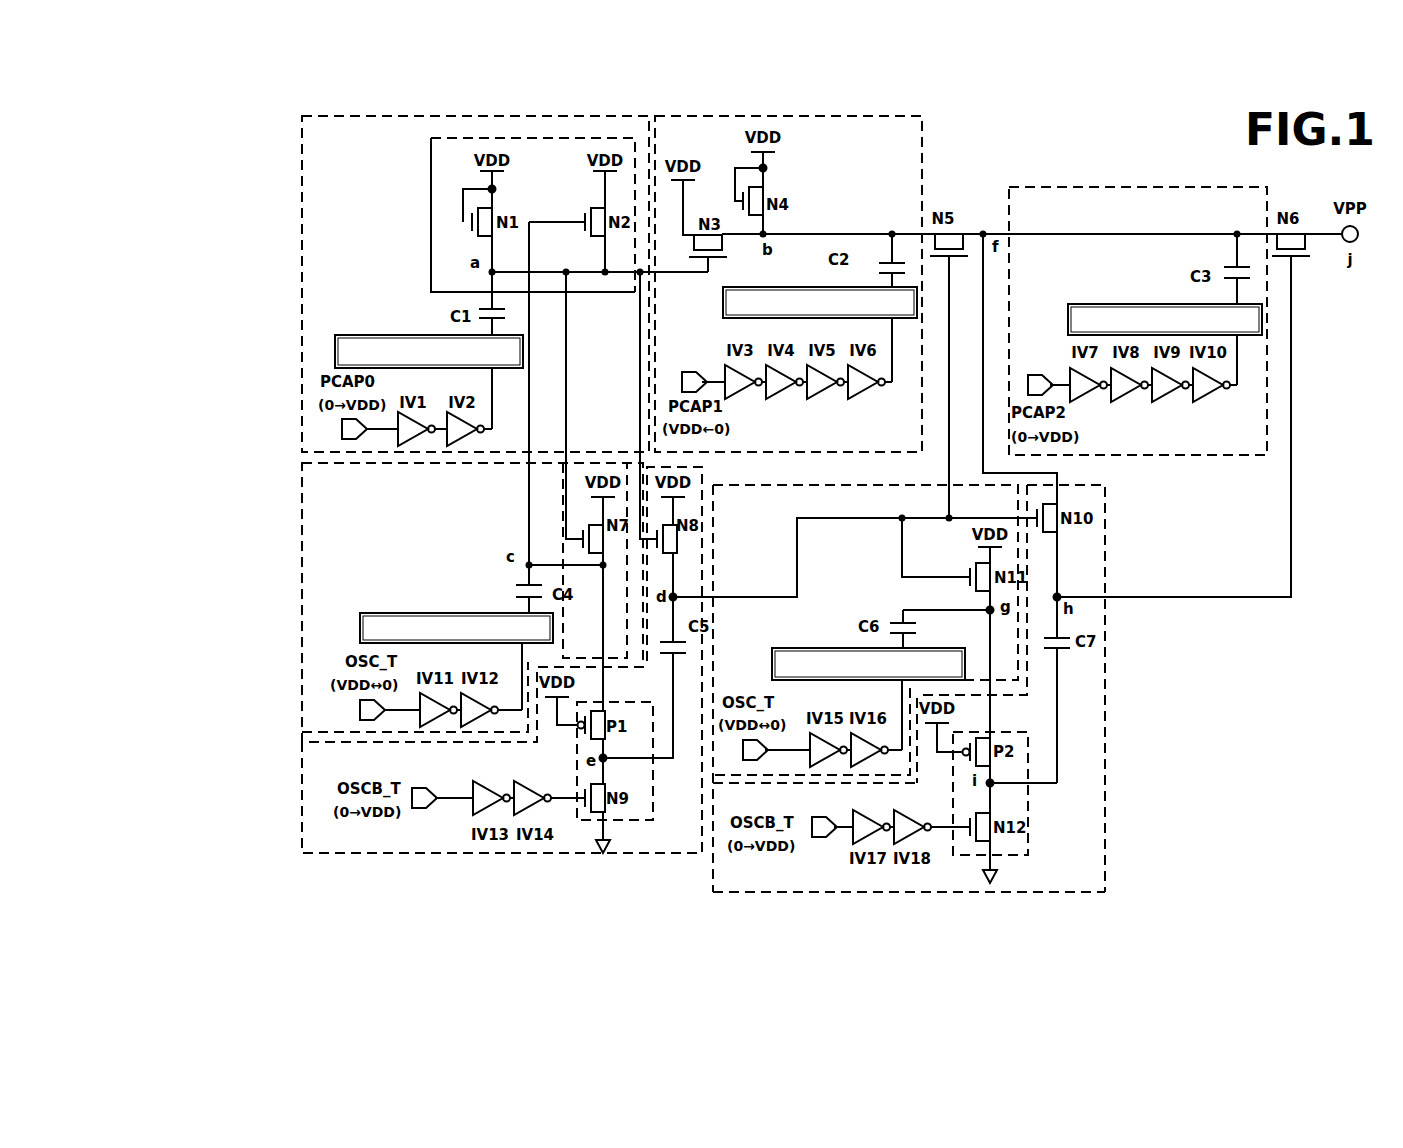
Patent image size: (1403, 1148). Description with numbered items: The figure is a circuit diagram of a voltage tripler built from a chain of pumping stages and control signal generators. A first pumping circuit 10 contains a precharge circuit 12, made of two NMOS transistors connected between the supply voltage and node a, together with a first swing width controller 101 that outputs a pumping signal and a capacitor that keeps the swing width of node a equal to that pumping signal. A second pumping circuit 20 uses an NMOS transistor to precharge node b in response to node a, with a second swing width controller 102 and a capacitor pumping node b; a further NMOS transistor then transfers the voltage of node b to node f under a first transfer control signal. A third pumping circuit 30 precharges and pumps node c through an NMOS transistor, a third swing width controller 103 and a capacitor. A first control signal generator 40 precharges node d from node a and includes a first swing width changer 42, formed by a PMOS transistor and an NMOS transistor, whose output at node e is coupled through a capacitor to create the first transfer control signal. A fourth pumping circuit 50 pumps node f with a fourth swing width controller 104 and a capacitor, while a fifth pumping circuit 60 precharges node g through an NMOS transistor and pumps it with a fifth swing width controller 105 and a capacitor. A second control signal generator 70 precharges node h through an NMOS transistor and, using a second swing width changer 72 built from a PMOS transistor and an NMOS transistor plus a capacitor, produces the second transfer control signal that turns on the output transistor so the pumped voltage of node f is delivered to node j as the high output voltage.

The first pumping circuit 10 is at (302, 190).
The precharge circuit 12 is at (431, 220).
The second pumping circuit 20 is at (922, 162).
The third pumping circuit 30 is at (302, 505).
The first control signal generator 40 is at (490, 856).
The first swing width changer 42 is at (617, 822).
The fourth pumping circuit 50 is at (1175, 187).
The fifth pumping circuit 60 is at (1108, 503).
The second control signal generator 70 is at (1108, 738).
The second swing width changer 72 is at (1028, 843).
The first swing width controller 101 is at (378, 335).
The second swing width controller 102 is at (723, 306).
The third swing width controller 103 is at (430, 613).
The fourth swing width controller 104 is at (1105, 304).
The fifth swing width controller 105 is at (795, 648).